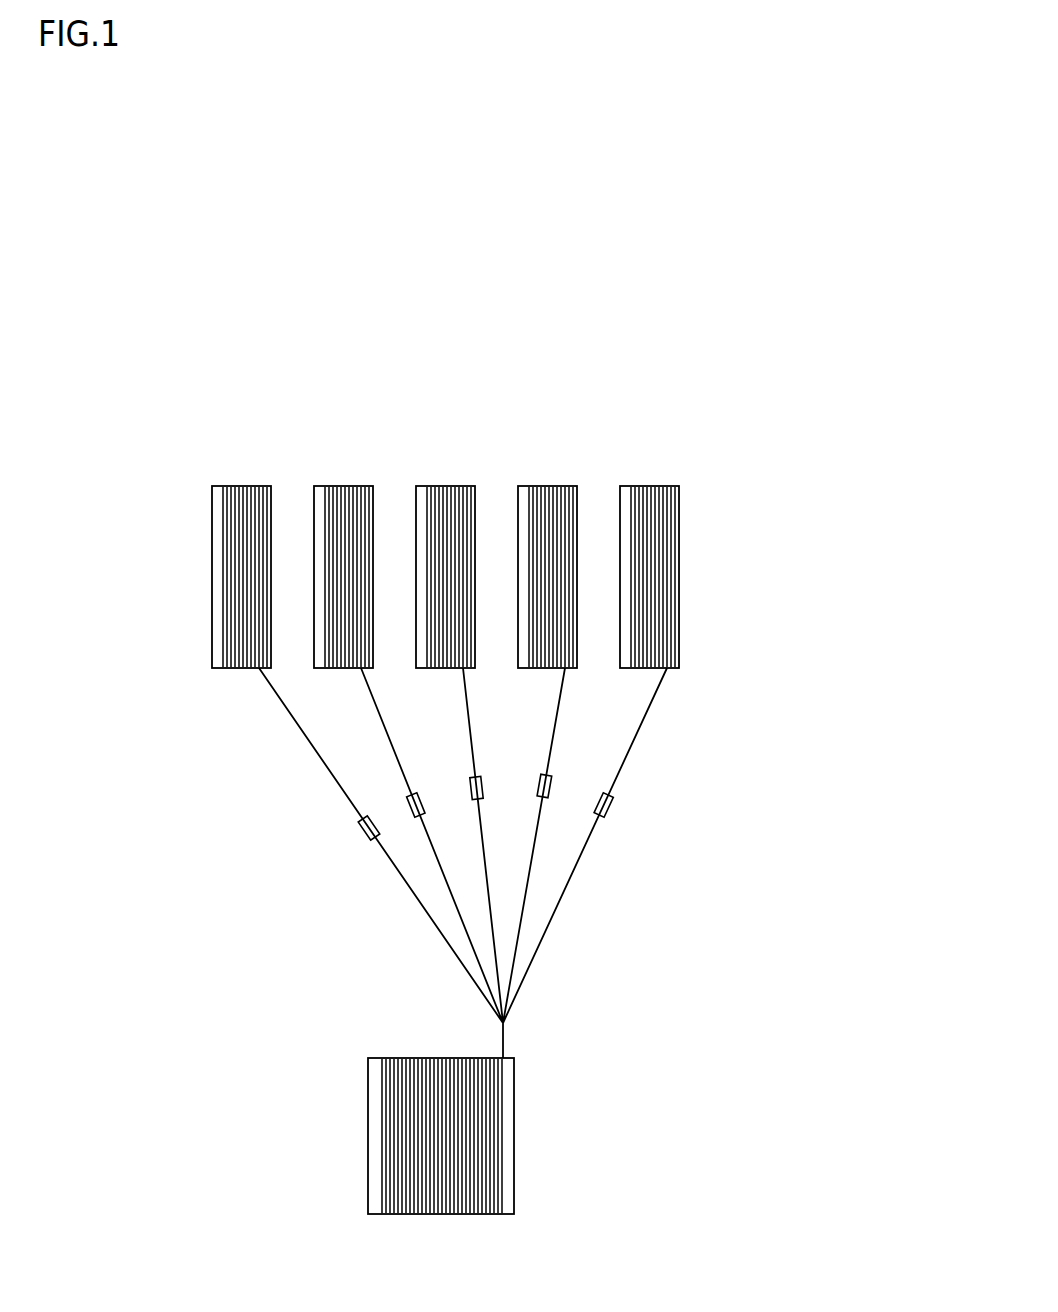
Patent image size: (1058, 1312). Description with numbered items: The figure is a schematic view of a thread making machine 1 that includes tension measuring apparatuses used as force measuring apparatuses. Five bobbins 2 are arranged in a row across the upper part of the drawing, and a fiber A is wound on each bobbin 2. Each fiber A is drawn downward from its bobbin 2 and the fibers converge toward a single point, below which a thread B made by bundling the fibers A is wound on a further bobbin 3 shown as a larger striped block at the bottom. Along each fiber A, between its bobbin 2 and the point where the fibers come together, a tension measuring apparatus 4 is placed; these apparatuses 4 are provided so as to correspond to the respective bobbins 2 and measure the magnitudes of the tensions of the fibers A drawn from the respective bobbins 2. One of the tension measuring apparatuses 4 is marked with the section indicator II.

The thread making machine 1 is at (870, 287).
The bobbin 2 is at (267, 486).
The bobbin 3 is at (507, 1136).
The tension measuring apparatus 4 is at (363, 838).
The fiber A is at (239, 668).
The thread B is at (497, 1092).
The section line II (view of FIG. 2) II is at (351, 841).